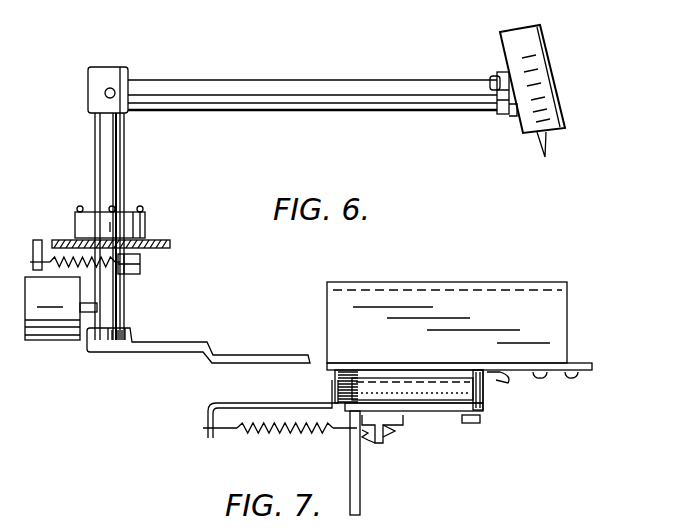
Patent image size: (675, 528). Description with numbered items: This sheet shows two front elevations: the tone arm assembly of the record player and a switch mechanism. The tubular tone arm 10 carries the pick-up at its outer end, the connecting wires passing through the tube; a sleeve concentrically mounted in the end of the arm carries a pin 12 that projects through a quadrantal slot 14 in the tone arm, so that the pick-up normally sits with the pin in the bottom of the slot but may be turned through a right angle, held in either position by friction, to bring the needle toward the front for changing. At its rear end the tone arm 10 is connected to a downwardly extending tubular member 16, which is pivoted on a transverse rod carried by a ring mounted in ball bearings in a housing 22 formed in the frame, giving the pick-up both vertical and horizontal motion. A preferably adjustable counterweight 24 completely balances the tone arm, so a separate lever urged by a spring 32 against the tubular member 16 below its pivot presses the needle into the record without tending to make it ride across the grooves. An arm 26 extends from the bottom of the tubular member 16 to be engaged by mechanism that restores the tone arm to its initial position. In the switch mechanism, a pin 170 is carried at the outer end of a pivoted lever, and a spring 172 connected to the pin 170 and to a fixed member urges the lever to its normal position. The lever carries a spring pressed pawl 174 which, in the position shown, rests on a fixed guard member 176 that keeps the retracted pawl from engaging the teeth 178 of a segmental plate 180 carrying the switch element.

In FIG. 6, the tubular tone arm 10 is at (309, 86).
In FIG. 6, the pin 12 is at (497, 99).
In FIG. 6, the quadrantal slot 14 is at (497, 80).
In FIG. 6, the tubular member 16 is at (124, 161).
In FIG. 6, the housing 22 is at (147, 226).
In FIG. 6, the counterweight 24 is at (46, 342).
In FIG. 6, the arm 26 is at (190, 342).
In FIG. 6, the spring 32 is at (50, 258).
In FIG. 7, the pin 170 is at (360, 483).
In FIG. 7, the spring 172 is at (280, 424).
In FIG. 7, the spring pressed pawl 174 is at (398, 406).
In FIG. 7, the fixed guard member 176 is at (360, 400).
In FIG. 7, the teeth 178 is at (417, 396).
In FIG. 7, the segmental plate 180 is at (452, 388).